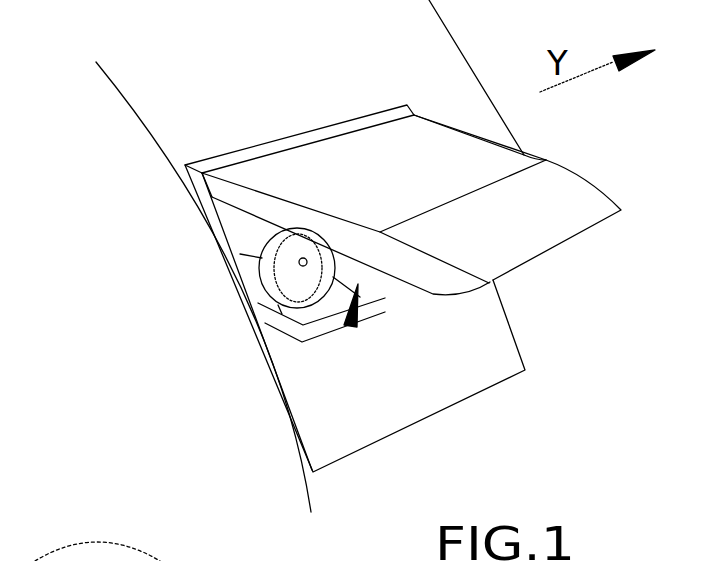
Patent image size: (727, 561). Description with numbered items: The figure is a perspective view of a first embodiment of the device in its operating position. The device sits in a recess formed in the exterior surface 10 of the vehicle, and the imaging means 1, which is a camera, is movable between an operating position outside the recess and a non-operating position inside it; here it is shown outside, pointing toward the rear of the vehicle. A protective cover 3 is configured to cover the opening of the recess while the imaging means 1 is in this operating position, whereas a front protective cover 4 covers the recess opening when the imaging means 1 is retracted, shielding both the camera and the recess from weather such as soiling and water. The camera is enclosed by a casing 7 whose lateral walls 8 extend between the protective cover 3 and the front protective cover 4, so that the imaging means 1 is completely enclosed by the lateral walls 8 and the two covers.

The imaging means 1 is at (292, 282).
The protective cover 3 is at (372, 417).
The front protective cover 4 is at (323, 165).
The casing 7 is at (348, 327).
The lateral walls 8 is at (390, 300).
The exterior surface 10 is at (165, 115).